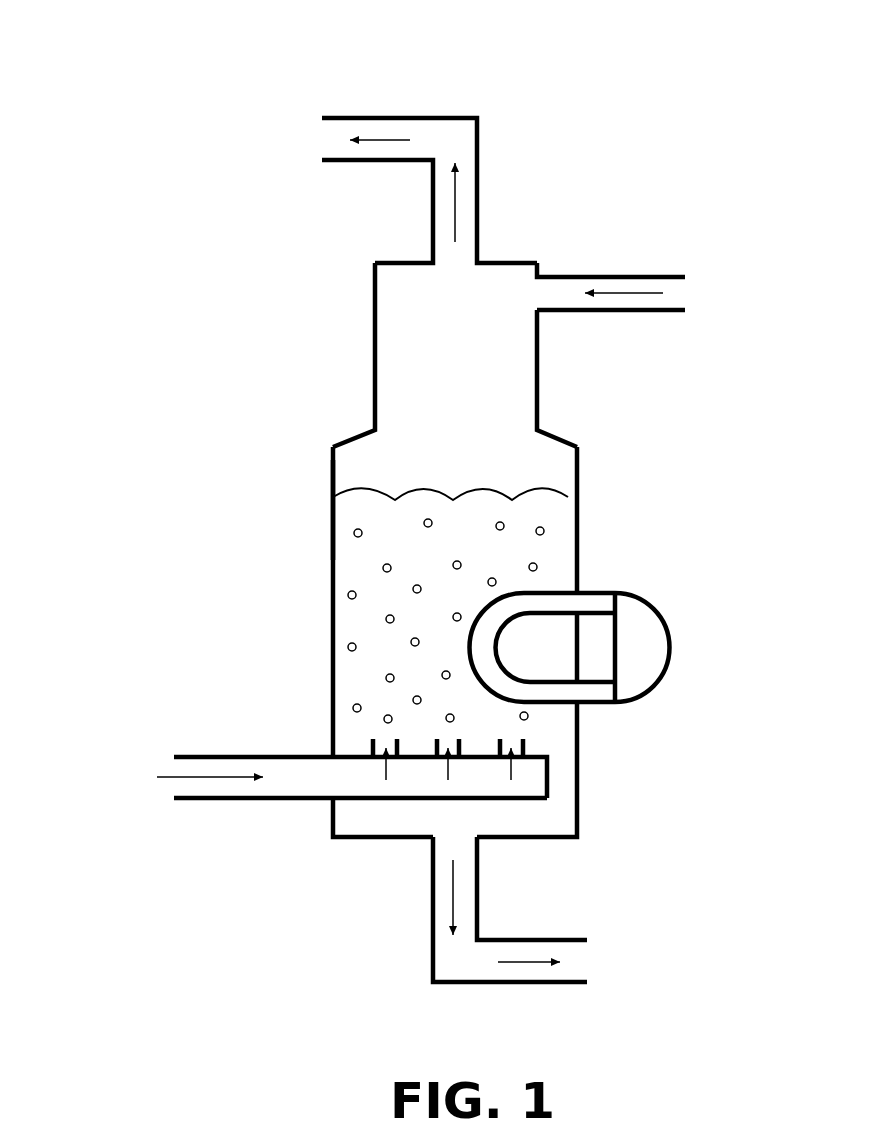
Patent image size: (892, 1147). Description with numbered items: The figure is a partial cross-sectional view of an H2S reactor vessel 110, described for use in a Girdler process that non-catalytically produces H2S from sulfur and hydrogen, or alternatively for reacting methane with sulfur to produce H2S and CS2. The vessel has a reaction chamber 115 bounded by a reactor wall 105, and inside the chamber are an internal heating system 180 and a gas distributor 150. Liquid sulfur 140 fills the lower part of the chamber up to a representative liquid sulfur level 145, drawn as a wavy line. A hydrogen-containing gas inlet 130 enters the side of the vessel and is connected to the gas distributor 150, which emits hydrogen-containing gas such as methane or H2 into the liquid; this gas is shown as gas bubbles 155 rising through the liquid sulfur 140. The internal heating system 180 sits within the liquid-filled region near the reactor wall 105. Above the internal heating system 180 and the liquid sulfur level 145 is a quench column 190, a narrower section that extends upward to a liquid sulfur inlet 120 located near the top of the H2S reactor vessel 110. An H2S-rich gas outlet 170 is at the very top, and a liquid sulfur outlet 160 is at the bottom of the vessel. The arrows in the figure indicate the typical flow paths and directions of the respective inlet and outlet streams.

The H2S reactor vessel 110 is at (480, 33).
The reactor wall 105 is at (333, 715).
The reaction chamber 115 is at (333, 560).
The quench column 190 is at (373, 352).
The H2S-rich gas outlet 170 is at (402, 190).
The liquid sulfur inlet 120 is at (634, 287).
The liquid sulfur level 145 is at (337, 500).
The liquid sulfur 140 is at (555, 538).
The gas bubbles 155 is at (386, 678).
The internal heating system 180 is at (650, 657).
The gas distributor 150 is at (525, 747).
The hydrogen-containing gas inlet 130 is at (326, 777).
The liquid sulfur outlet 160 is at (536, 909).